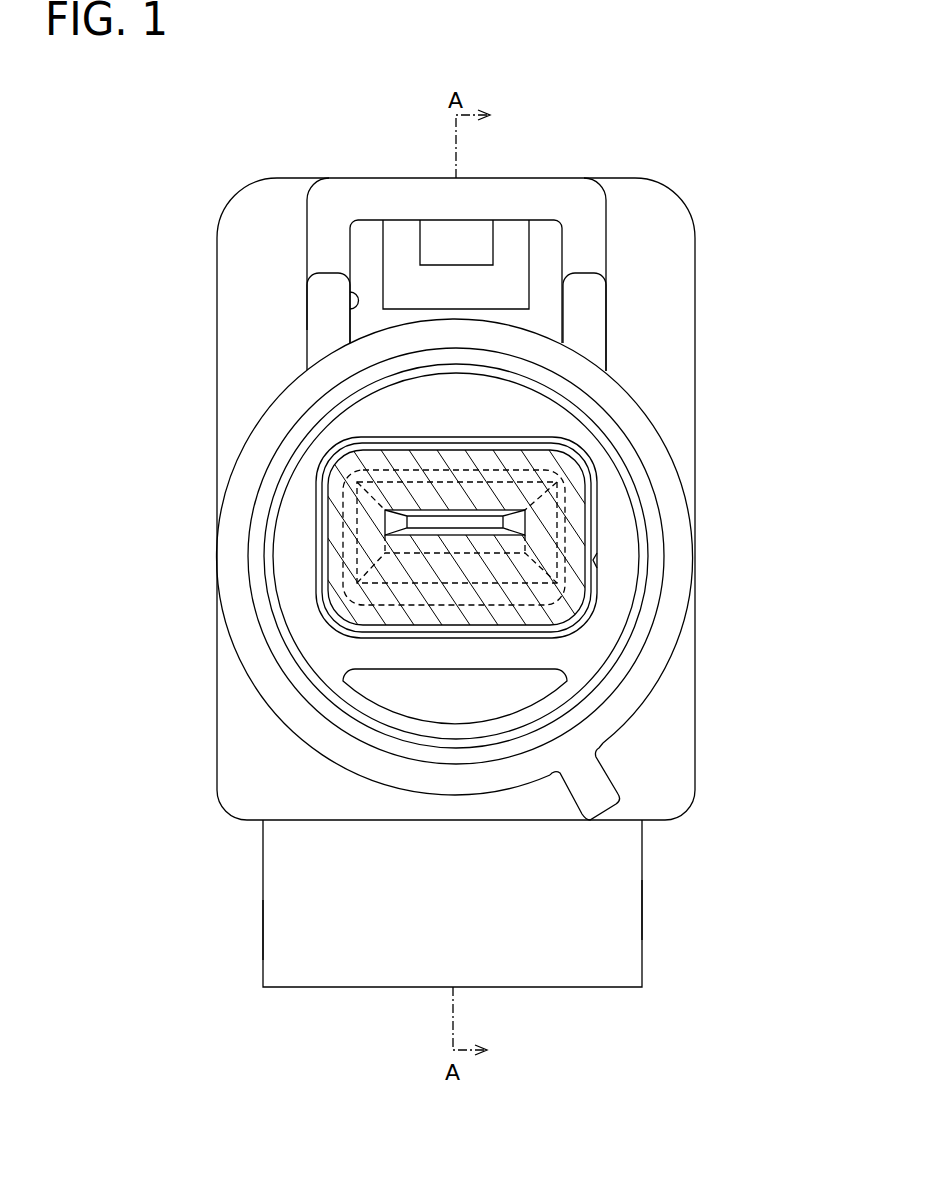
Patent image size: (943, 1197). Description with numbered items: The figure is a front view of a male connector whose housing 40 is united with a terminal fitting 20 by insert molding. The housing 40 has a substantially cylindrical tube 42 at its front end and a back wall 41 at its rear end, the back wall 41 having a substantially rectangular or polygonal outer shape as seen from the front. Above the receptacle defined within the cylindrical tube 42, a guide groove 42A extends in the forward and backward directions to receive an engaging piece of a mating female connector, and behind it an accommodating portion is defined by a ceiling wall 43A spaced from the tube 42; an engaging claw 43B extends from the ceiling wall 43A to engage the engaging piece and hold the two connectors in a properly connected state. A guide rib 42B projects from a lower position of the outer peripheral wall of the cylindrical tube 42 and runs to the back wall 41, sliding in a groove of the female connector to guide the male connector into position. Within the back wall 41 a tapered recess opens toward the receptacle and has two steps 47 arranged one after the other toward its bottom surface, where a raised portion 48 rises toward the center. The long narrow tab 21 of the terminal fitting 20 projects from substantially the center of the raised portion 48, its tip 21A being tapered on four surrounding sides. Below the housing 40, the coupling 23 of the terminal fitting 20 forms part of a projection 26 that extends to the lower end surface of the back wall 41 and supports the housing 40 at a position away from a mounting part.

The terminal fitting 20 is at (227, 875).
The tab 21 is at (541, 523).
The tip 21A is at (386, 523).
The coupling 23 is at (250, 933).
The projection 26 is at (615, 905).
The housing 40 is at (707, 388).
The back wall 41 is at (650, 288).
The cylindrical tube 42 is at (267, 428).
The guide groove 42A is at (352, 302).
The guide rib 42B is at (592, 787).
The ceiling wall 43A is at (402, 205).
The engaging claw 43B is at (448, 237).
The steps 47 is at (590, 562).
The raised portion 48 is at (413, 499).